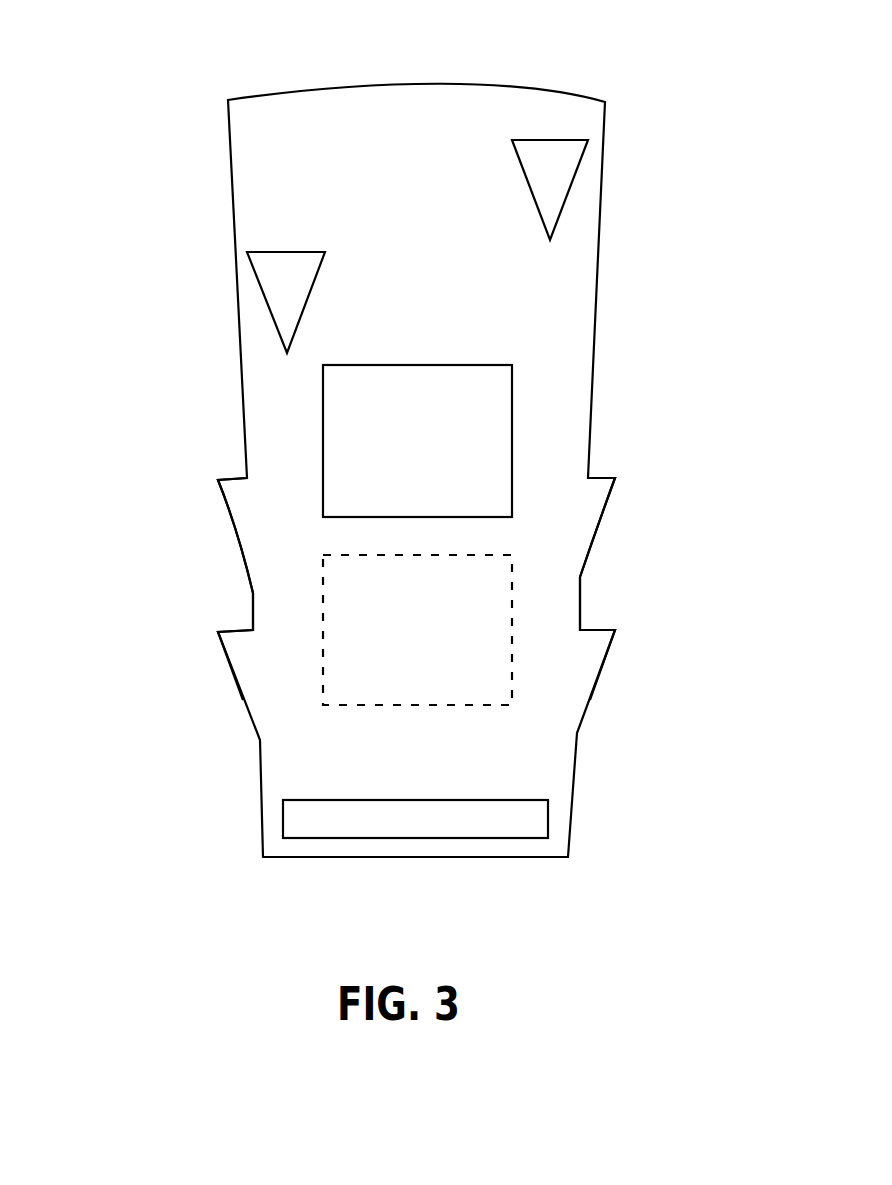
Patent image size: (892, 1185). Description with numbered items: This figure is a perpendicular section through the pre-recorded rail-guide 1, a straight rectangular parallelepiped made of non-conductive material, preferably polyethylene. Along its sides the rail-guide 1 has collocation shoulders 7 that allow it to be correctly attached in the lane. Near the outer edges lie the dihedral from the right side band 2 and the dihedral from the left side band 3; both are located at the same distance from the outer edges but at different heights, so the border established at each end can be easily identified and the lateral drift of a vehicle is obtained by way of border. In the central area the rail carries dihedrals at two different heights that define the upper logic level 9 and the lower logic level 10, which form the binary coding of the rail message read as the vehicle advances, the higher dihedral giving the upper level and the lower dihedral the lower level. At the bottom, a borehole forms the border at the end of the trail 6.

The rail-guide 1 is at (523, 88).
The dihedral from the right side band 2 is at (553, 178).
The dihedral from the left side band 3 is at (295, 288).
The border at the end of the trail 6 is at (525, 820).
The collocation shoulders 7 is at (615, 478).
The logic level "1" 9 is at (470, 410).
The logic level "0" 10 is at (447, 640).